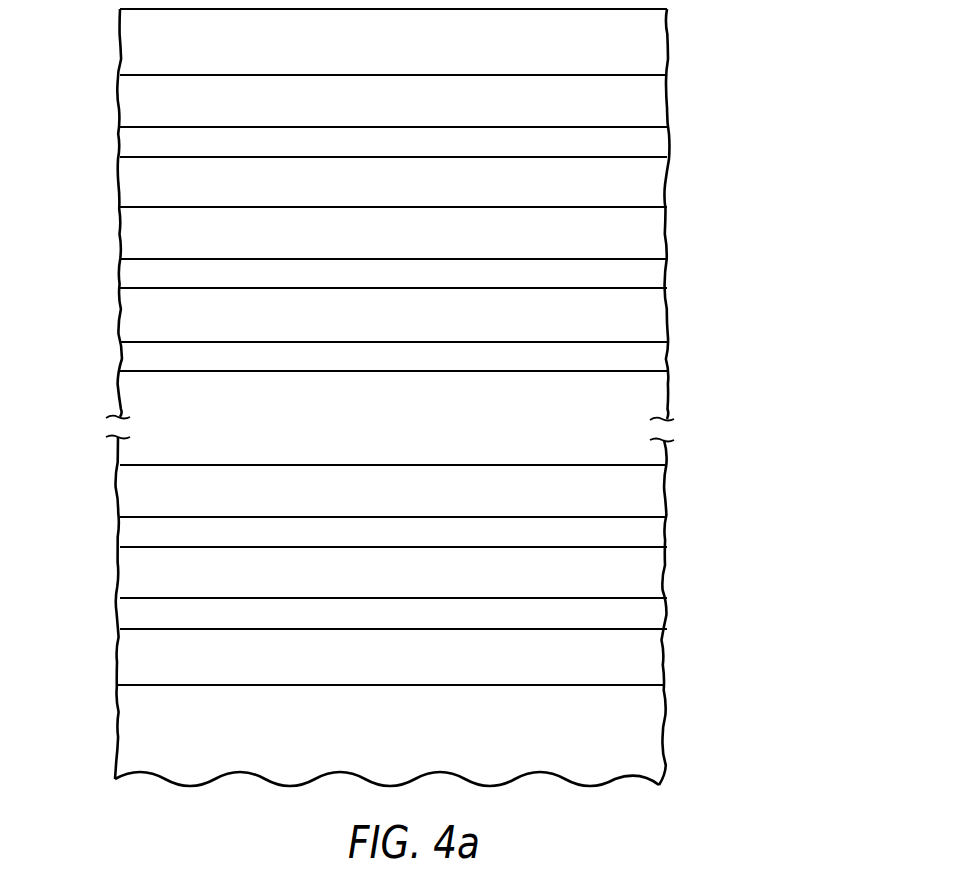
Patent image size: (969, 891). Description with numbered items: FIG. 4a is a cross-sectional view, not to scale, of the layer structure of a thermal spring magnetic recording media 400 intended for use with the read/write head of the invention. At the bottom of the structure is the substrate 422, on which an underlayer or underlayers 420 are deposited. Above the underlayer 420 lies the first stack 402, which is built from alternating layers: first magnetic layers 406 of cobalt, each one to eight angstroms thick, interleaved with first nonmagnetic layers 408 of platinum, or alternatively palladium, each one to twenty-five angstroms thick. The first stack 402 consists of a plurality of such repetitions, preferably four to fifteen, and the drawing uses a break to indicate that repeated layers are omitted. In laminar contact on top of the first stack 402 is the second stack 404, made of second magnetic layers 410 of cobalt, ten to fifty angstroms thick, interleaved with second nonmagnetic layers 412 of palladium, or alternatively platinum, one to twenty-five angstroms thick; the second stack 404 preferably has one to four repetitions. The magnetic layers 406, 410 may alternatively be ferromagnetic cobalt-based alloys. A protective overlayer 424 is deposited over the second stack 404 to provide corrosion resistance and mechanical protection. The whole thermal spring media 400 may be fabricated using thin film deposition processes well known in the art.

The thermal spring magnetic recording media 400 is at (699, 760).
The first stack 402 is at (375, 421).
The second stack 404 is at (375, 141).
The first magnetic layers 406 is at (665, 275).
The first nonmagnetic layers 408 is at (603, 330).
The second magnetic layers 410 is at (603, 117).
The second nonmagnetic layers 412 is at (668, 143).
The underlayer 420 is at (603, 670).
The substrate 422 is at (603, 743).
The protective overlayer 424 is at (603, 60).